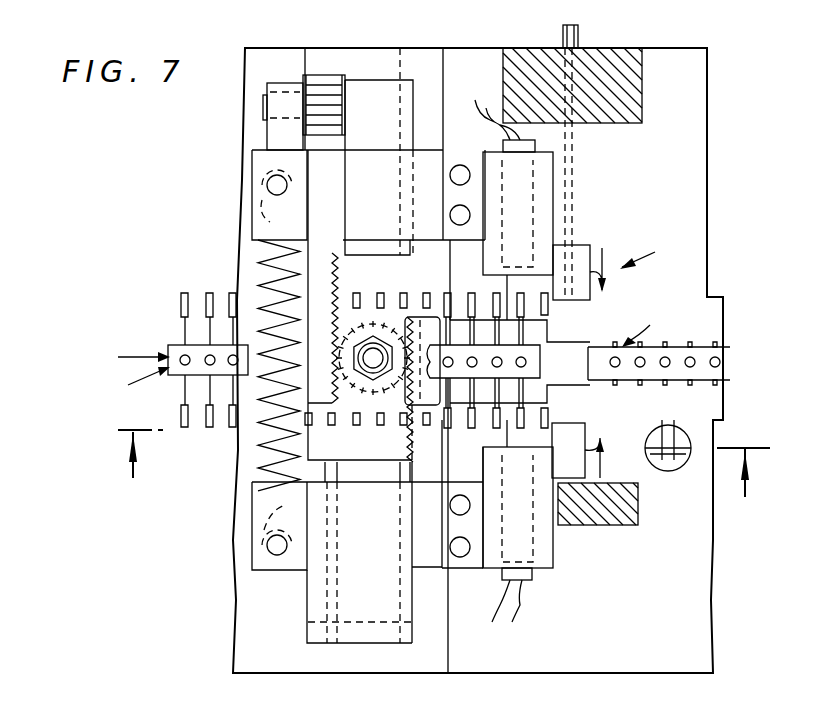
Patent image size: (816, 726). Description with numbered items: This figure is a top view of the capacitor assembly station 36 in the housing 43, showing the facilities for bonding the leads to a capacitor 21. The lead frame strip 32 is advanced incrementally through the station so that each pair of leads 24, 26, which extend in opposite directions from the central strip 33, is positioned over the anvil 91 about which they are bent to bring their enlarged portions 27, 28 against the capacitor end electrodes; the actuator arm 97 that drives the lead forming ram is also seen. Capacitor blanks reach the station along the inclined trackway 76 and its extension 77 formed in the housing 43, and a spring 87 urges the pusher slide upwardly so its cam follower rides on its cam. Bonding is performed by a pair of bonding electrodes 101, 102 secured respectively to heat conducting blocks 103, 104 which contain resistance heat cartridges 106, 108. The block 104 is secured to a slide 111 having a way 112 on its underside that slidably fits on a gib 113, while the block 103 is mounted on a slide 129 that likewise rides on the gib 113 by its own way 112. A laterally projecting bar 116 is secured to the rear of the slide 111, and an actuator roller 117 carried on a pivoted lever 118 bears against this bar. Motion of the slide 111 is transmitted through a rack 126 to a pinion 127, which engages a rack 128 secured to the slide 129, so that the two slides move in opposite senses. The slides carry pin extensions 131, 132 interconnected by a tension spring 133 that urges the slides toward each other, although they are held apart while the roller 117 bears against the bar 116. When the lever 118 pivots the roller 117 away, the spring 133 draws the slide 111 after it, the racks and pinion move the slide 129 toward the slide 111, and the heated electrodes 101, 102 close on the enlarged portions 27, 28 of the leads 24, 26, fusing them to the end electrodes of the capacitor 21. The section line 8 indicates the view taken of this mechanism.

The section line 8 is at (444, 479).
The capacitor 21 is at (563, 38).
The lead 24 is at (186, 392).
The lead 26 is at (185, 322).
The enlarged portion 27 is at (188, 427).
The enlarged portion 28 is at (210, 292).
The lead frame strip 32 is at (384, 350).
The central strip 33 is at (170, 346).
The capacitor assembly station 36 is at (686, 257).
The housing 43 is at (710, 118).
The inclined trackway 76 is at (578, 30).
The extension 77 is at (575, 205).
The spring 87 is at (663, 470).
The anvil 91 is at (582, 382).
The actuator arm 97 is at (600, 527).
The bonding electrode 101 is at (590, 442).
The bonding electrode 102 is at (588, 248).
The heat conducting block 103 is at (555, 555).
The heat conducting block 104 is at (555, 185).
The resistance heat cartridge 106 is at (532, 583).
The resistance heat cartridge 108 is at (535, 150).
The slide 111 is at (392, 150).
The way 112 is at (413, 95).
The gib 113 is at (386, 643).
The laterally projecting bar 116 is at (356, 50).
The actuator roller 117 is at (325, 78).
The lever 118 is at (267, 135).
The rack 126 is at (340, 275).
The pinion 127 is at (355, 385).
The rack 128 is at (412, 425).
The slide 129 is at (305, 622).
The pin extension 131 is at (272, 185).
The pin extension 132 is at (270, 548).
The tension spring 133 is at (262, 268).